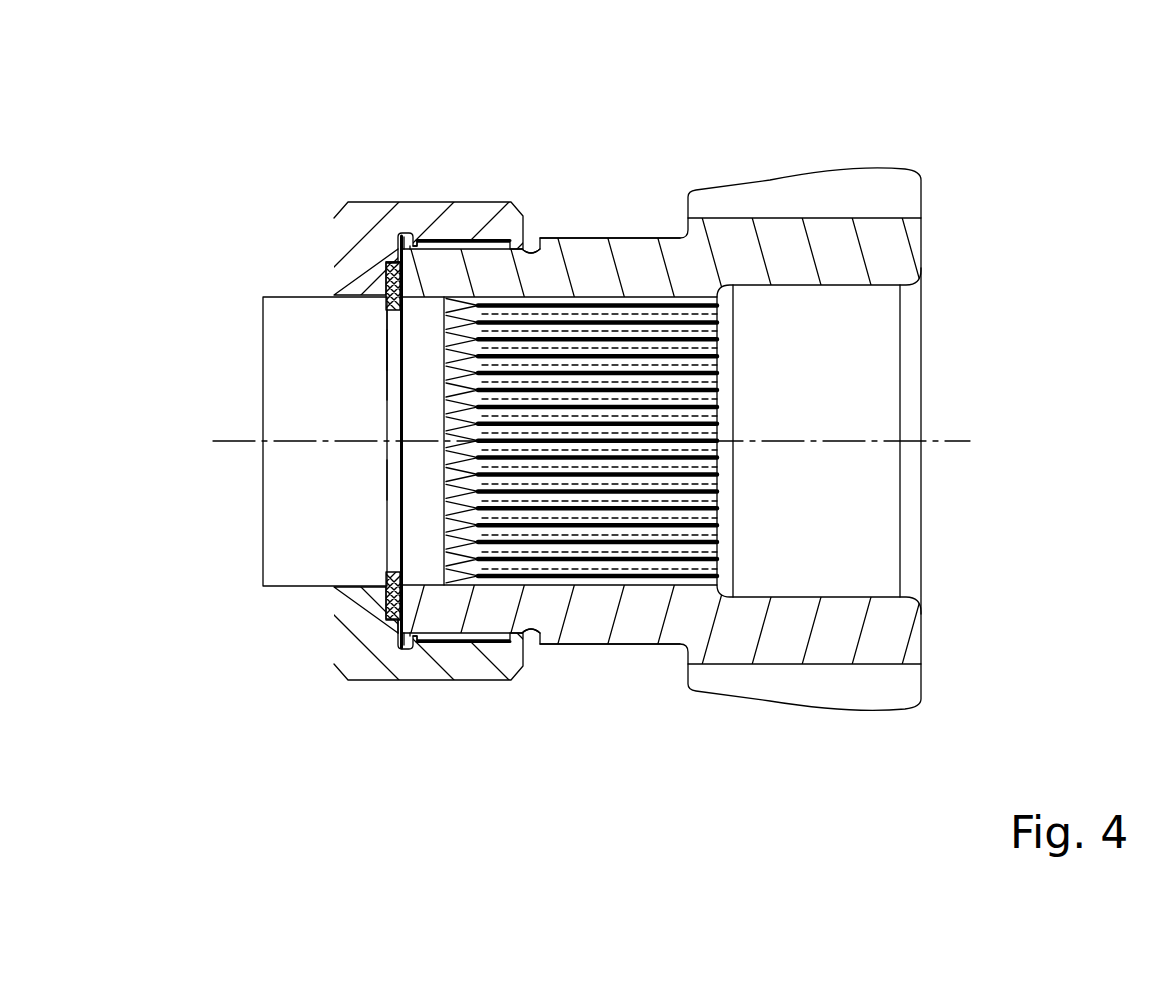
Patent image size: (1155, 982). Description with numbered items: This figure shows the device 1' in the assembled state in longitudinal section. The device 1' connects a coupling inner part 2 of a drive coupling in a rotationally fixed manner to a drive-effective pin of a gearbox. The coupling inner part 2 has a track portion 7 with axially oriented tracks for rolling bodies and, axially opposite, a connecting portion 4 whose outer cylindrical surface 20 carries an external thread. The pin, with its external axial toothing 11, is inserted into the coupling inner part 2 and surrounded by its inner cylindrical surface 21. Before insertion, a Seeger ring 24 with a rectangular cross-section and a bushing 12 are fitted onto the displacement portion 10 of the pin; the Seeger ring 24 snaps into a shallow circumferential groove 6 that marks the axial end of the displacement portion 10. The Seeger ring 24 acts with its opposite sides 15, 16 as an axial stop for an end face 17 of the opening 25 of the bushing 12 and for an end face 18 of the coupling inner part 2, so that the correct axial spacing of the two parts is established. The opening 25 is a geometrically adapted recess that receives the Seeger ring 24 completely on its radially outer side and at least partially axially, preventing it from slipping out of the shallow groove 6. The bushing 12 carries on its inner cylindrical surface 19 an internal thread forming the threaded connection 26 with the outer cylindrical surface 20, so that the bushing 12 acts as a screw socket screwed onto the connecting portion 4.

The device 1' is at (496, 72).
The coupling inner part 2 is at (912, 260).
The connecting portion 4 is at (442, 622).
The circumferential groove 6 is at (397, 352).
The track portion 7 is at (806, 171).
The displacement portion 10 is at (285, 533).
The external axial toothing 11 is at (724, 411).
The bushing 12 is at (343, 221).
The side of circlip 15 is at (386, 394).
The side of circlip 16 is at (415, 468).
The end face of bushing 17 is at (396, 279).
The end face of coupling inner part 18 is at (387, 603).
The inner cylindrical surface of bushing 19 is at (543, 265).
The outer cylindrical surface of coupling inner part 20 is at (599, 645).
The inner cylindrical surface of coupling inner part 21 is at (423, 580).
The Seeger ring 24 is at (395, 268).
The opening in bushing 25 is at (393, 622).
The threaded connection 26 is at (507, 644).